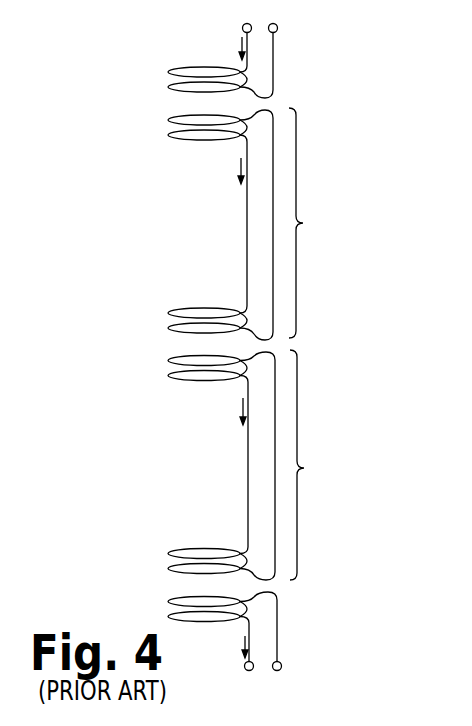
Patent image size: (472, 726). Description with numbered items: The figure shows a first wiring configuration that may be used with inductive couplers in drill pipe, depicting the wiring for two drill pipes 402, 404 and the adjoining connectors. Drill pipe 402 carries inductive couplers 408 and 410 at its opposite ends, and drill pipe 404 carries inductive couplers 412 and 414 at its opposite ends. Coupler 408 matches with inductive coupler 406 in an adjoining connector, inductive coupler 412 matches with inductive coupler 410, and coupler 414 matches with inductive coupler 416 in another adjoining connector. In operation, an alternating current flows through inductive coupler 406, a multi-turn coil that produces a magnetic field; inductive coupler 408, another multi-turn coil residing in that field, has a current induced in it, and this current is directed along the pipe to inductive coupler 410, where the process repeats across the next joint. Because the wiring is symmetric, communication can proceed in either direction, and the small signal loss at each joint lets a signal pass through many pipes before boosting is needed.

The drill pipe 402 is at (317, 223).
The drill pipe 404 is at (318, 465).
The inductive coupler 406 is at (170, 88).
The inductive coupler 408 is at (170, 136).
The inductive coupler 410 is at (170, 329).
The inductive coupler 412 is at (170, 377).
The inductive coupler 414 is at (170, 570).
The inductive coupler 416 is at (170, 618).